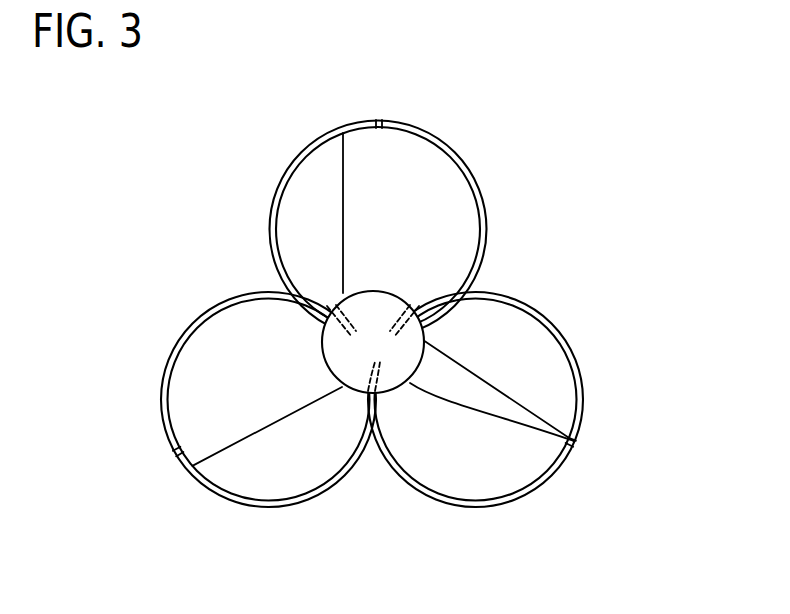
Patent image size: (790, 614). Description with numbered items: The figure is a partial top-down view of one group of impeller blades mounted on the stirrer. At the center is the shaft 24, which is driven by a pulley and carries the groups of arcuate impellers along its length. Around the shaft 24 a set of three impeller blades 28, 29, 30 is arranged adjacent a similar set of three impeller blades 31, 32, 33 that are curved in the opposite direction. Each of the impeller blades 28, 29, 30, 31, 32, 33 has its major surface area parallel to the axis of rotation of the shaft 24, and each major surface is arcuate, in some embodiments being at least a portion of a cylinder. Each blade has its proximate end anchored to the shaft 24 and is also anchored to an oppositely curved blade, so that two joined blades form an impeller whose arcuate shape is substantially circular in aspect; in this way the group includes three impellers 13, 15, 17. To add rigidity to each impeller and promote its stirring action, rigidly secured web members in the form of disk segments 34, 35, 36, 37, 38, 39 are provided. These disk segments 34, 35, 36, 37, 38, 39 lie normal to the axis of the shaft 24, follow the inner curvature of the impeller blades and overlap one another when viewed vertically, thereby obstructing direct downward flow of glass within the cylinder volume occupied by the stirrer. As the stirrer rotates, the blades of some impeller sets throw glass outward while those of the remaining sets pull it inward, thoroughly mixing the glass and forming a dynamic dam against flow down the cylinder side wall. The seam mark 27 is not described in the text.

The impeller 13 is at (302, 126).
The impeller 15 is at (580, 348).
The impeller 17 is at (145, 415).
The shaft 24 is at (578, 446).
The seam 27 is at (412, 121).
The impeller blade 28 is at (444, 140).
The impeller blade 29 is at (435, 500).
The impeller blade 30 is at (190, 323).
The impeller blade 31 is at (291, 165).
The impeller blade 32 is at (541, 310).
The impeller blade 33 is at (258, 507).
The disk segment 34 is at (510, 473).
The disk segment 35 is at (217, 383).
The disk segment 36 is at (450, 210).
The disk segment 37 is at (557, 377).
The disk segment 38 is at (315, 465).
The disk segment 39 is at (300, 223).